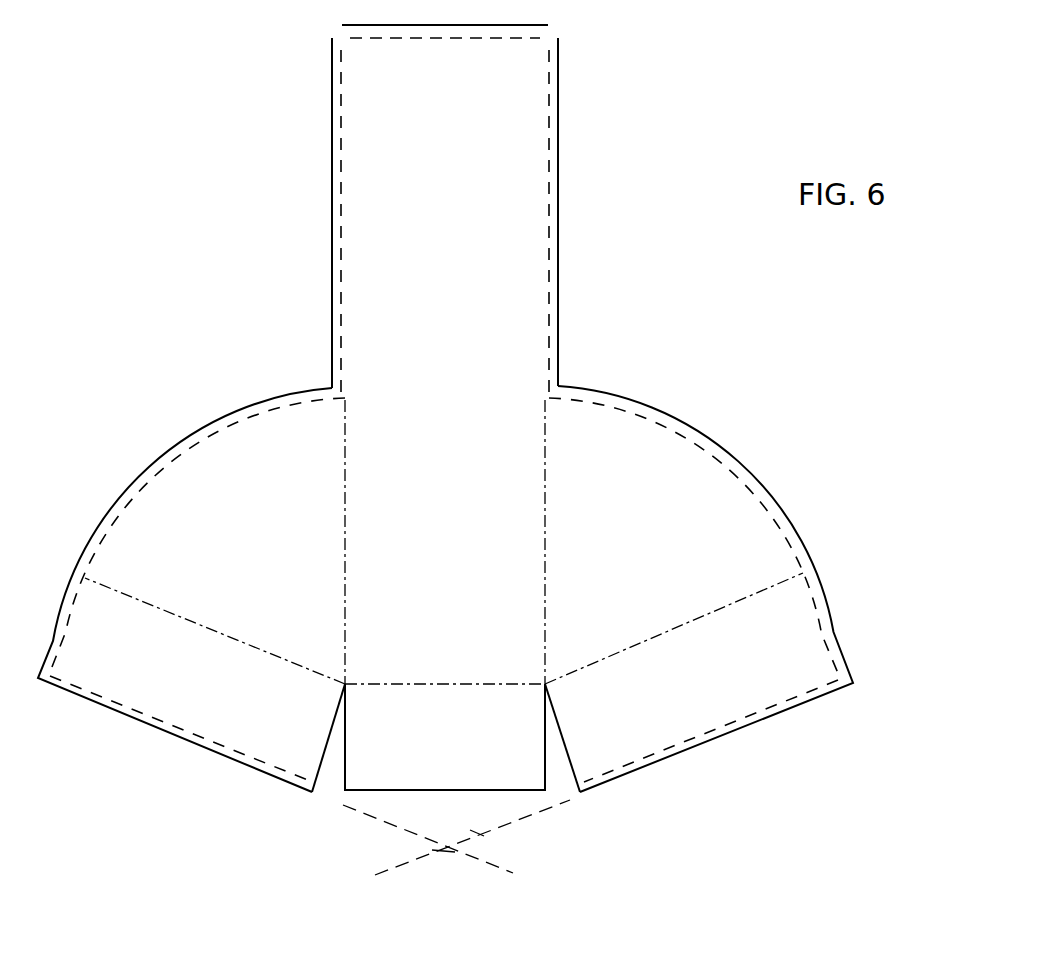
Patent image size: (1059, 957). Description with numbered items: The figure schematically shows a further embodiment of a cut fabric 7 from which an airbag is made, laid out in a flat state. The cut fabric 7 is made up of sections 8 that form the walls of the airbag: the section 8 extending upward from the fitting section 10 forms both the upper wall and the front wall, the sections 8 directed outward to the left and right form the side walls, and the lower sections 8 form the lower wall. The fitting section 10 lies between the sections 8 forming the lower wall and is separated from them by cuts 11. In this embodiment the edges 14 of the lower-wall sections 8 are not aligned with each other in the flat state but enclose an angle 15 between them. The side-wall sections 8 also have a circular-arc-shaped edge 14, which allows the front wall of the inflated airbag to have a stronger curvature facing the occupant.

The cut fabric 7 is at (578, 74).
The sections 8 is at (522, 190).
The fitting section 10 is at (387, 770).
The cuts 11 is at (330, 758).
The edges 14 is at (238, 400).
The angle 15 is at (430, 840).